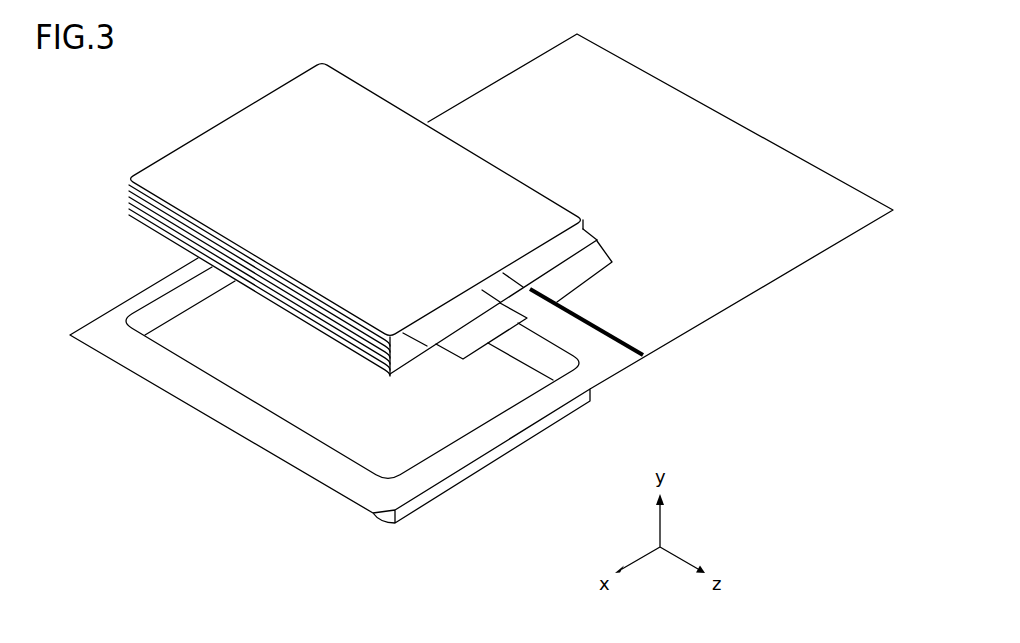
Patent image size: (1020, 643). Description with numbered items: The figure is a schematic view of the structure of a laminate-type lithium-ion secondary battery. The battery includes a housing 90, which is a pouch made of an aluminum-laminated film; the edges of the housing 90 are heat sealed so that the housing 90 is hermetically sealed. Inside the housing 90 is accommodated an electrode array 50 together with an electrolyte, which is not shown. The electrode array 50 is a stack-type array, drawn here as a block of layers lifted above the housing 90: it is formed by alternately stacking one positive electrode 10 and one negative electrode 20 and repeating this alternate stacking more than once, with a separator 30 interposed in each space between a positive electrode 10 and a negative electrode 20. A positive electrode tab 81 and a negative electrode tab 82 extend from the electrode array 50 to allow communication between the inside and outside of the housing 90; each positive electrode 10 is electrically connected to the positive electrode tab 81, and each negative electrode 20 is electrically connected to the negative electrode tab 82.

The positive electrode 10 is at (228, 291).
The negative electrode 20 is at (128, 196).
The separator 30 is at (128, 202).
The electrode array 50 is at (312, 220).
The positive electrode tab 81 is at (598, 272).
The negative electrode tab 82 is at (466, 360).
The housing 90 is at (740, 131).